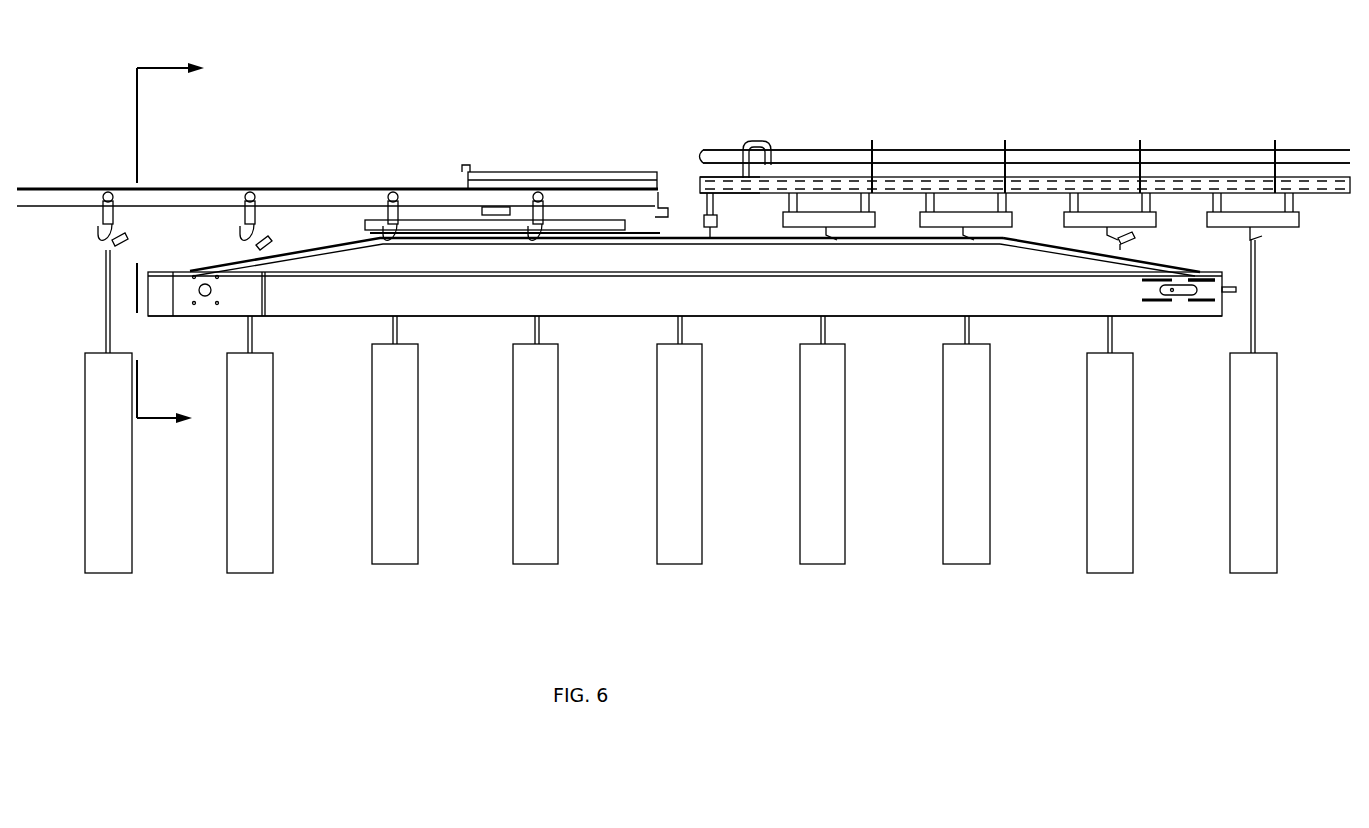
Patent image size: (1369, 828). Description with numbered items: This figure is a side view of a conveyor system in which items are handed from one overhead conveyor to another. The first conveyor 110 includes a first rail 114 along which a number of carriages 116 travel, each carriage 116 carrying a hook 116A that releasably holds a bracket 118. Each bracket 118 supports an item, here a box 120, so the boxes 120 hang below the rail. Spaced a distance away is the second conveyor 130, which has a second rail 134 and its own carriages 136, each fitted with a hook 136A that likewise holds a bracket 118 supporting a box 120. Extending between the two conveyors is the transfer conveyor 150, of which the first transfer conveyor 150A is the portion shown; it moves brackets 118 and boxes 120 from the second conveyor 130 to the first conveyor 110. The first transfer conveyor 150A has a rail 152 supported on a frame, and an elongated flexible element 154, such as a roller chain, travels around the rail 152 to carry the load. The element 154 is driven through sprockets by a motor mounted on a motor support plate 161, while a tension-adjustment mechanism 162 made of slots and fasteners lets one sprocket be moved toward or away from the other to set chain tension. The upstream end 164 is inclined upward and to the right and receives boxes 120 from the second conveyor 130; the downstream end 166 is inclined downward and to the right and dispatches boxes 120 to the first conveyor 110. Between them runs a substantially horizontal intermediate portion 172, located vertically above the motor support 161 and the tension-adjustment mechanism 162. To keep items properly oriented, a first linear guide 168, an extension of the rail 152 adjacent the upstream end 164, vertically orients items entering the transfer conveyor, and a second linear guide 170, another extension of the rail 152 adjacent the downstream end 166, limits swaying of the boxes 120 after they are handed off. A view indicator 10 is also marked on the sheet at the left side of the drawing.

The section line 10 is at (183, 239).
The first conveyor 110 is at (1104, 114).
The first rail 114 is at (1200, 162).
The carriage 116 is at (1287, 246).
The hook 116A is at (1122, 243).
The bracket 118 is at (111, 343).
The box 120 is at (128, 437).
The second conveyor 130 is at (303, 165).
The second rail 134 is at (368, 197).
The carriage 136 is at (236, 233).
The hook 136A is at (118, 240).
The transfer conveyor 150 is at (696, 130).
The first transfer conveyor 150A is at (745, 323).
The rail 152 is at (614, 306).
The elongated flexible element 154 is at (338, 240).
The motor support plate 161 is at (256, 290).
The tension-adjustment mechanism 162 is at (1186, 305).
The upstream end 164 is at (292, 246).
The downstream end 166 is at (1053, 240).
The first linear guide 168 is at (160, 275).
The second linear guide 170 is at (1196, 276).
The intermediate portion 172 is at (767, 228).